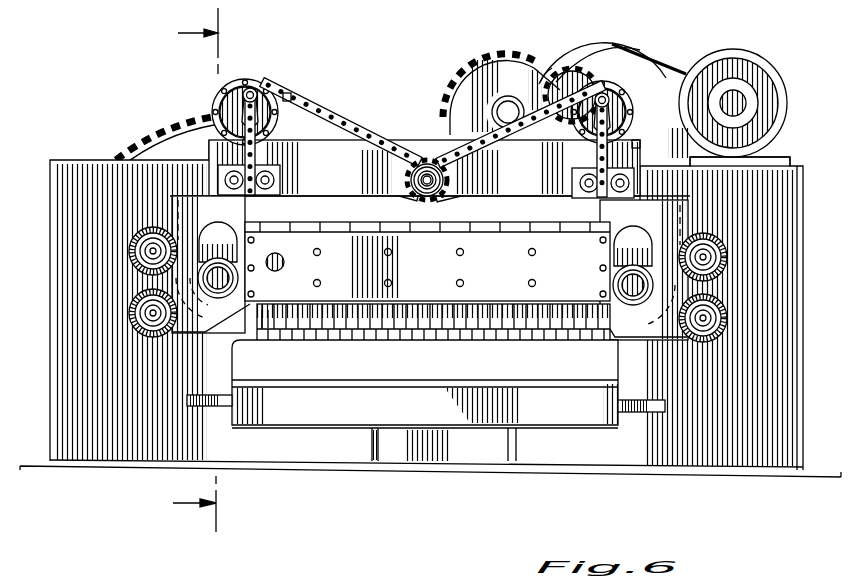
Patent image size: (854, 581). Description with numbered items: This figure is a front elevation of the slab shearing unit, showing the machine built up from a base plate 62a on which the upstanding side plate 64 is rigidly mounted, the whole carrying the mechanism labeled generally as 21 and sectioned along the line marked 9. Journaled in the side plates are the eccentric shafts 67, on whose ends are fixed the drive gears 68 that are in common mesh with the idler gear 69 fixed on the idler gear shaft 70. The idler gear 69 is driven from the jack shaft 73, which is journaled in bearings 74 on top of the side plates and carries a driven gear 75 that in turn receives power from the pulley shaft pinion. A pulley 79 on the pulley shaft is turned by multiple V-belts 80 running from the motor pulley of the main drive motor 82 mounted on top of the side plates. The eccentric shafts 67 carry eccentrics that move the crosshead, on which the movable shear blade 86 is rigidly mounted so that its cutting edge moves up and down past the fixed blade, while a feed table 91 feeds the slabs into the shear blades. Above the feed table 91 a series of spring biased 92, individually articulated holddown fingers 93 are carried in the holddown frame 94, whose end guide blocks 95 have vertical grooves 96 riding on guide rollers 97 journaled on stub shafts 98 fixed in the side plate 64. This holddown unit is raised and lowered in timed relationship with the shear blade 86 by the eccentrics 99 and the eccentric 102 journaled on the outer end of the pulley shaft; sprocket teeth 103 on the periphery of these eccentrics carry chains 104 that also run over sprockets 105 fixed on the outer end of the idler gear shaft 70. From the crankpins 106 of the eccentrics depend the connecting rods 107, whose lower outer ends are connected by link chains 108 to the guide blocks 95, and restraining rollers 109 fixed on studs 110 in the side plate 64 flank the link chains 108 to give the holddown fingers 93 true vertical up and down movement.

The section line 9- 9 is at (206, 270).
The frame 21 is at (68, 160).
The base plate 62a is at (78, 470).
The side plate 64 is at (50, 371).
The eccentric shafts 67 is at (222, 306).
The drive gears 68 is at (212, 118).
The idler gear 69 is at (403, 140).
The idler gear shaft 70 is at (410, 166).
The jack shaft 73 is at (494, 106).
The bearings 74 is at (488, 66).
The driven gear 75 is at (510, 56).
The pulley 79 is at (640, 62).
The multiple V-belts 80 is at (674, 64).
The main drive motor 82 is at (756, 66).
The movable shear blade 86 is at (540, 352).
The feed table 91 is at (622, 383).
The spring biased 92 is at (287, 231).
The holddown fingers 93 is at (290, 341).
The holddown frame 94 is at (381, 232).
The end guide blocks 95 is at (140, 143).
The vertical grooves 96 is at (175, 210).
The guide rollers 97 is at (423, 284).
The stub shafts 98 is at (423, 284).
The eccentrics 99 is at (259, 96).
The eccentric 102 is at (582, 82).
The sprocket teeth 103 is at (549, 70).
The chains 104 is at (344, 120).
The sprockets 105 is at (438, 160).
The crankpins 106 is at (252, 88).
The connecting rods 107 is at (224, 102).
The link chains 108 is at (291, 98).
The restraining rollers 109 is at (200, 140).
The studs 110 is at (281, 187).